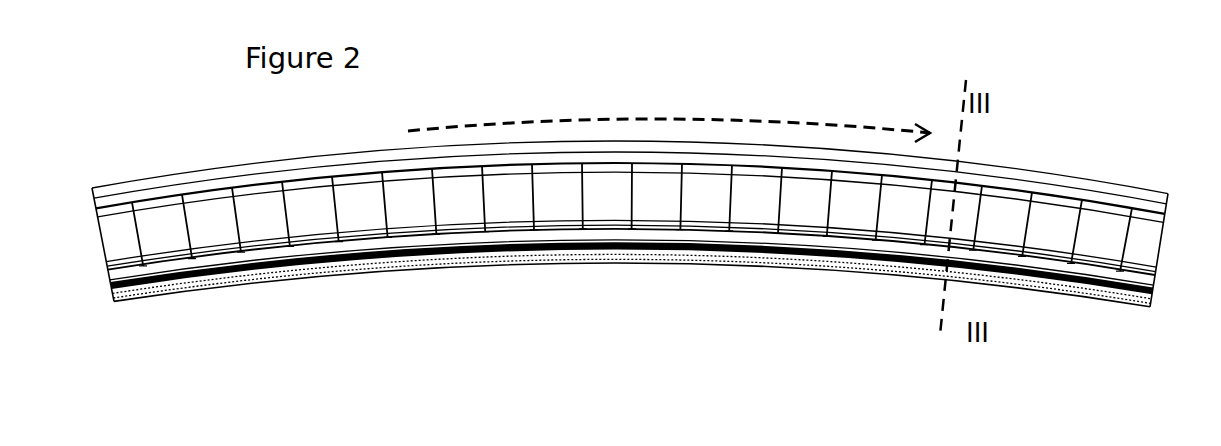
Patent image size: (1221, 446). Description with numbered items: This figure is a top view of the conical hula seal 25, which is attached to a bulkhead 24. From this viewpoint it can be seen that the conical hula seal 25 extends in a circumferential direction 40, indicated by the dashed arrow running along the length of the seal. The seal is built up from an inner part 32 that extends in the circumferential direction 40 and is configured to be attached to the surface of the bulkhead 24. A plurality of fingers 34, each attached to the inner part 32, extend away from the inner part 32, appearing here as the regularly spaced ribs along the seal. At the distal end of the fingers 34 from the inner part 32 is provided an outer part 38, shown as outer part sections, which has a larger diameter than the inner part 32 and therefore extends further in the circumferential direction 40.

The bulkhead 24 is at (873, 260).
The conical hula seal 25 is at (997, 184).
The inner part 32 is at (716, 240).
The fingers 34 is at (140, 223).
The outer part 38 is at (353, 178).
The circumferential direction 40 is at (593, 120).